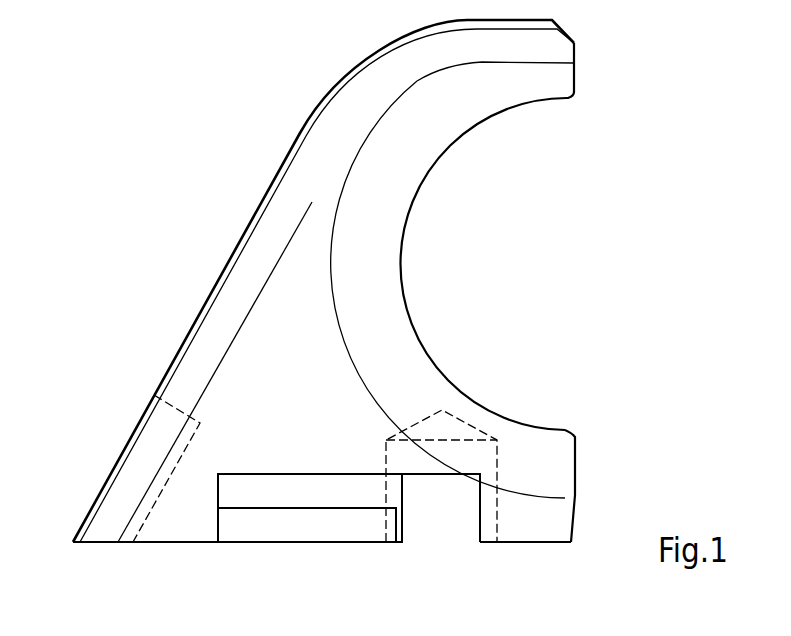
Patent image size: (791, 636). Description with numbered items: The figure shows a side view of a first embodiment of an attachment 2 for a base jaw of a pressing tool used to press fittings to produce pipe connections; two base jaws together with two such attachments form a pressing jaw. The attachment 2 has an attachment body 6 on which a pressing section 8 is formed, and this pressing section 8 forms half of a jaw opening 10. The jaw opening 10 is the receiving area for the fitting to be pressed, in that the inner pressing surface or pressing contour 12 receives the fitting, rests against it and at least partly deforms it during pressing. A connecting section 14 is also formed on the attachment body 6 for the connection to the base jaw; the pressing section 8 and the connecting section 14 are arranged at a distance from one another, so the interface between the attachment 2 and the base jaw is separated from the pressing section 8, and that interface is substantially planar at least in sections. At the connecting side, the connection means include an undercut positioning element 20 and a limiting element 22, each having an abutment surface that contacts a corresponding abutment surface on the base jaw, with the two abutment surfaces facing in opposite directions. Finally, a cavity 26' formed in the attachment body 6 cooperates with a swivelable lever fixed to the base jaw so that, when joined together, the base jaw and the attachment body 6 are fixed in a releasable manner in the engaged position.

The attachment 2 is at (188, 147).
The attachment body 6 is at (252, 383).
The pressing section 8 is at (423, 162).
The jaw opening 10 is at (605, 208).
The pressing contour 12 is at (430, 338).
The connecting section 14 is at (177, 517).
The undercut positioning element 20 is at (300, 530).
The limiting element 22 is at (522, 530).
The cavity 26' is at (130, 466).